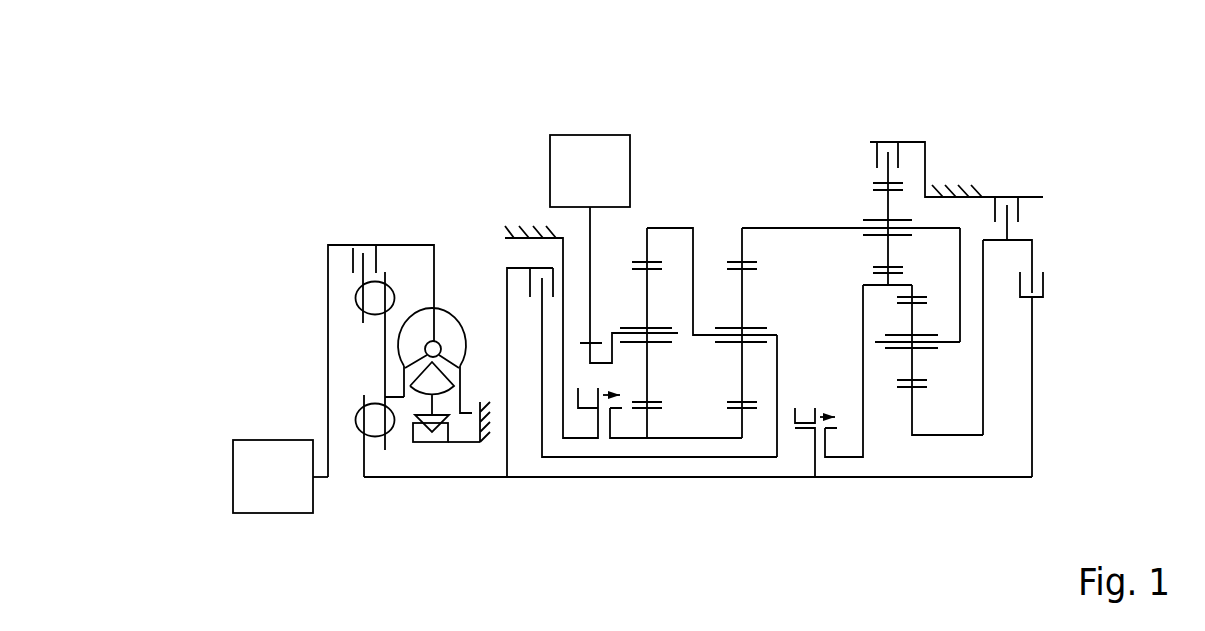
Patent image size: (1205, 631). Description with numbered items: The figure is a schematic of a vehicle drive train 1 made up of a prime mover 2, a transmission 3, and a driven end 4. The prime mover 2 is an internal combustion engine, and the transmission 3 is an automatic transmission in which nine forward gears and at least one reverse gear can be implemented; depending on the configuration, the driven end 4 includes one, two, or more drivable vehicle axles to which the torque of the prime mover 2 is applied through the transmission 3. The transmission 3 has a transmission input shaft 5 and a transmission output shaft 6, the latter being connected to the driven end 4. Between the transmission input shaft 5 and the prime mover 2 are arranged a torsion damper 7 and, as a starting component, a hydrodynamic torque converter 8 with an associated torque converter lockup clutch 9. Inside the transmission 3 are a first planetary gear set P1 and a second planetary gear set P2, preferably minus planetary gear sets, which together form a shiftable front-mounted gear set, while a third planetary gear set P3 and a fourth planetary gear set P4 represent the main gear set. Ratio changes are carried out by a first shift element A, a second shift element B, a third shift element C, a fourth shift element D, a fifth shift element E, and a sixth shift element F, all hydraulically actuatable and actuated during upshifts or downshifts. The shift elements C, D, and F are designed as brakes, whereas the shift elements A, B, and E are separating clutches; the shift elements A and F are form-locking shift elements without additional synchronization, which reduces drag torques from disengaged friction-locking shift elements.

The vehicle drive train 1 is at (407, 145).
The prime mover 2 is at (260, 452).
The transmission 3 is at (773, 167).
The driven end 4 is at (587, 148).
The transmission input shaft 5 is at (403, 478).
The transmission output shaft 6 is at (588, 353).
The torsion damper 7 is at (372, 362).
The hydrodynamic torque converter 8 is at (449, 303).
The torque converter lockup clutch 9 is at (362, 243).
The fifth hydraulically actuatable shift element E is at (540, 263).
The sixth hydraulically actuatable shift element F is at (613, 413).
The first hydraulically actuatable shift element A is at (805, 433).
The second hydraulically actuatable shift element B is at (1050, 283).
The third hydraulically actuatable shift element C is at (1010, 192).
The fourth hydraulically actuatable shift element D is at (890, 137).
The first planetary gear set P1 is at (912, 448).
The second planetary gear set P2 is at (867, 205).
The third planetary gear set P3 is at (742, 217).
The fourth planetary gear set P4 is at (647, 217).